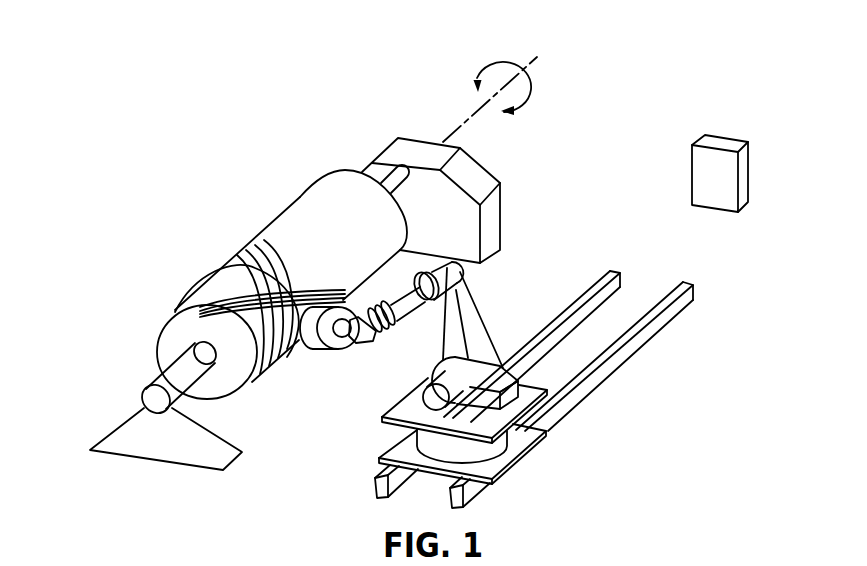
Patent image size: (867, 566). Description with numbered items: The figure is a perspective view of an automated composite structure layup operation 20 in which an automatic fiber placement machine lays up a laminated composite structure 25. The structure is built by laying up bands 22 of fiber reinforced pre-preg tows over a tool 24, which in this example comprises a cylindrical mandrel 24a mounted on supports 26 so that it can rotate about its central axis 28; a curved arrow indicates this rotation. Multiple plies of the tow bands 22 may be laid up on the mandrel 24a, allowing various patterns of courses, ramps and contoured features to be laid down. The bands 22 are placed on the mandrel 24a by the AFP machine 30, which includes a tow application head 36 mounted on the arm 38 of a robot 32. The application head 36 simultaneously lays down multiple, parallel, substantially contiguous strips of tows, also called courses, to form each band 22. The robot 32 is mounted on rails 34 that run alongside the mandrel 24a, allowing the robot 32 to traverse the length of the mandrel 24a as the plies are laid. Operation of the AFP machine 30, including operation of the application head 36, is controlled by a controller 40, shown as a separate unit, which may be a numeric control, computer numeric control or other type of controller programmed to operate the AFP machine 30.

The automated composite structure layup operation 20 is at (542, 214).
The bands 22 is at (215, 276).
The tool 24 is at (318, 126).
The cylindrical mandrel 24a is at (291, 196).
The laminated composite structure 25 is at (275, 378).
The supports 26 is at (483, 168).
The central axis 28 is at (472, 116).
The AFP machine 30 is at (492, 294).
The robot 32 is at (493, 362).
The rails 34 is at (610, 365).
The tow application head 36 is at (328, 372).
The arm 38 is at (410, 305).
The controller 40 is at (742, 177).